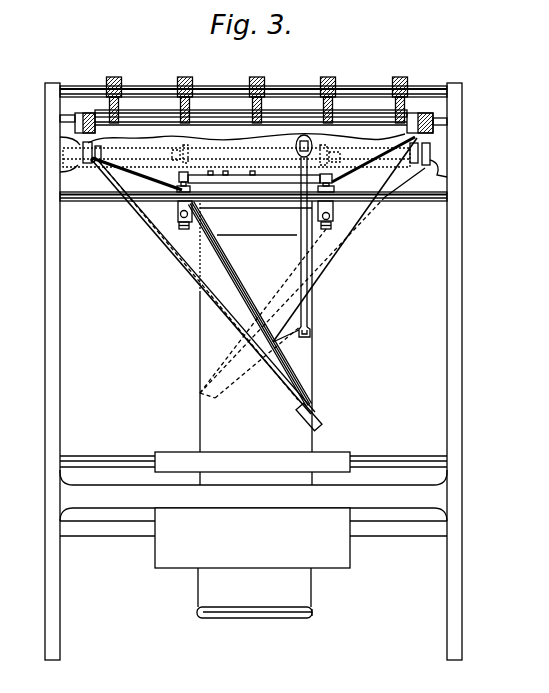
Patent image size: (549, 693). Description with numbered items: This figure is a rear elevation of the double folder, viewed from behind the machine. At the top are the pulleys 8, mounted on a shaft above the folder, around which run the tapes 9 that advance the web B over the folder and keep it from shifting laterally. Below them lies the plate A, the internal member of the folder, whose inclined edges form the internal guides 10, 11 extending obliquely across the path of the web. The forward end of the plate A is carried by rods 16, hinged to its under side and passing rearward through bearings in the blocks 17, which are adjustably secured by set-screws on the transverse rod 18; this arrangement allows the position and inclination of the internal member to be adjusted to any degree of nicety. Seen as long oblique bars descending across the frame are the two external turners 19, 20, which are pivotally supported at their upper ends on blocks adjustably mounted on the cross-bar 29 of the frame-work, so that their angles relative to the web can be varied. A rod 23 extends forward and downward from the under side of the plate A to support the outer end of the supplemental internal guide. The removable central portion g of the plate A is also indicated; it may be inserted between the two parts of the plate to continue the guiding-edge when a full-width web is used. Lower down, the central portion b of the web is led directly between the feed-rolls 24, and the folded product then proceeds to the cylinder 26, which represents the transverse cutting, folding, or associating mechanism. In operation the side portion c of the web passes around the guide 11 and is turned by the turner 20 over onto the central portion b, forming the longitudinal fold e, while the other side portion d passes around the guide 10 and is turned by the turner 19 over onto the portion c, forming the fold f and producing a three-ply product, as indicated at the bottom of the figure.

The pulleys 8 is at (120, 81).
The tapes 9 is at (118, 113).
The internal guide 10 is at (166, 184).
The internal guide 11 is at (356, 170).
The rods 16 is at (179, 226).
The bearing-blocks 17 is at (178, 208).
The transverse rod 18 is at (426, 202).
The external turner 19 is at (114, 182).
The external turner 20 is at (403, 183).
The rod 23 is at (301, 257).
The feed-rolls 24 is at (253, 468).
The cylinder 26 is at (253, 538).
The cross-bar 29 is at (84, 166).
The plate A is at (236, 156).
The web B is at (246, 132).
The central portion of the web b is at (256, 627).
The side portion of the web c is at (331, 263).
The side portion of the web d is at (188, 268).
The longitudinal fold e is at (312, 612).
The longitudinal fold f is at (197, 612).
The central portion of the plate g is at (255, 404).